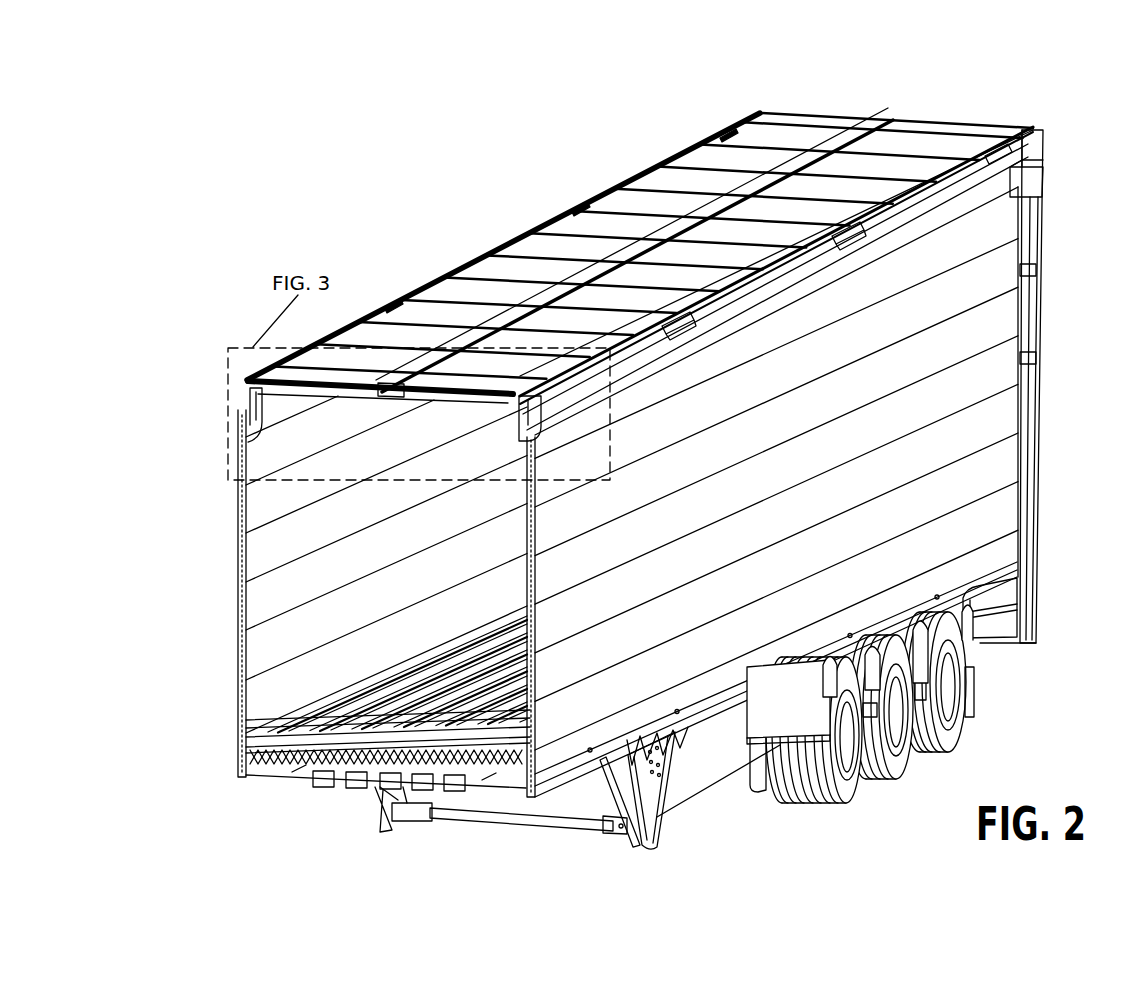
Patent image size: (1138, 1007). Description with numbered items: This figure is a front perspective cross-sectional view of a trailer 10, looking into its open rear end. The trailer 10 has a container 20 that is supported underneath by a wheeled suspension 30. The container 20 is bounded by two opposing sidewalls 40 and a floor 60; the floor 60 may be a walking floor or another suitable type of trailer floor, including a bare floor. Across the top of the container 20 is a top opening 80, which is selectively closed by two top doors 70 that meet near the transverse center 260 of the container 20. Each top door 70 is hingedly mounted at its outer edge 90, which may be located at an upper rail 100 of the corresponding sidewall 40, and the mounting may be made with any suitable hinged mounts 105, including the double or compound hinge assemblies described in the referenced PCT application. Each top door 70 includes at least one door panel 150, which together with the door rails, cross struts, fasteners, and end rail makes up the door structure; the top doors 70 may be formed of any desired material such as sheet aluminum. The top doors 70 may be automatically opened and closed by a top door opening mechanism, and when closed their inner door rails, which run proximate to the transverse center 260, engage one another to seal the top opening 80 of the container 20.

The trailer 10 is at (548, 135).
The container 20 is at (228, 565).
The wheeled suspension 30 is at (962, 770).
The sidewall 40 is at (975, 480).
The floor 60 is at (300, 770).
The top door 70 is at (816, 130).
The top opening 80 is at (870, 96).
The outer edge 90 is at (1047, 124).
The upper rail 100 is at (280, 400).
The hinged mount 105 is at (724, 126).
The door panel 150 is at (553, 332).
The transverse center 260 is at (895, 115).